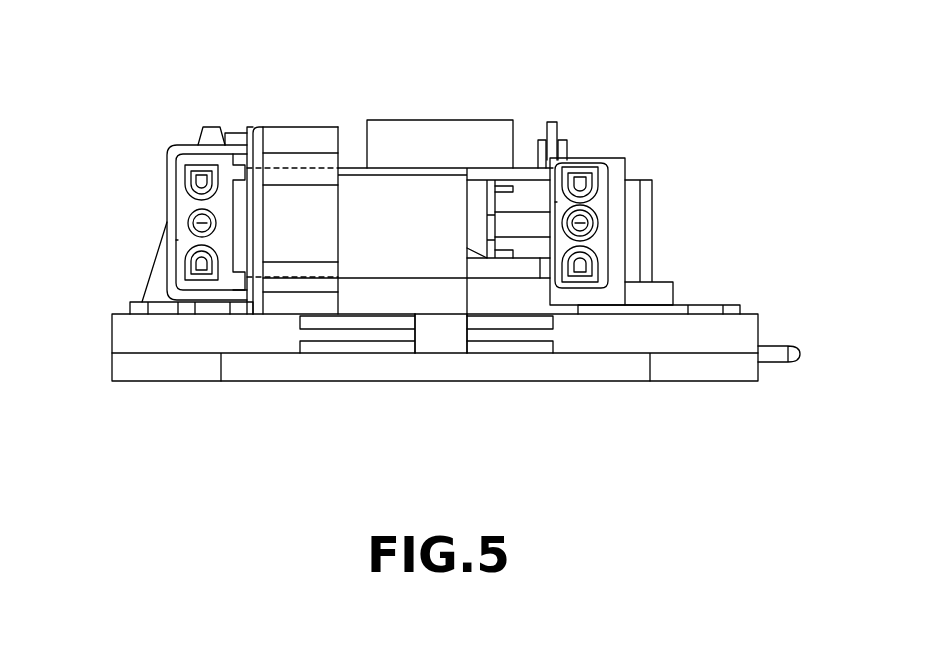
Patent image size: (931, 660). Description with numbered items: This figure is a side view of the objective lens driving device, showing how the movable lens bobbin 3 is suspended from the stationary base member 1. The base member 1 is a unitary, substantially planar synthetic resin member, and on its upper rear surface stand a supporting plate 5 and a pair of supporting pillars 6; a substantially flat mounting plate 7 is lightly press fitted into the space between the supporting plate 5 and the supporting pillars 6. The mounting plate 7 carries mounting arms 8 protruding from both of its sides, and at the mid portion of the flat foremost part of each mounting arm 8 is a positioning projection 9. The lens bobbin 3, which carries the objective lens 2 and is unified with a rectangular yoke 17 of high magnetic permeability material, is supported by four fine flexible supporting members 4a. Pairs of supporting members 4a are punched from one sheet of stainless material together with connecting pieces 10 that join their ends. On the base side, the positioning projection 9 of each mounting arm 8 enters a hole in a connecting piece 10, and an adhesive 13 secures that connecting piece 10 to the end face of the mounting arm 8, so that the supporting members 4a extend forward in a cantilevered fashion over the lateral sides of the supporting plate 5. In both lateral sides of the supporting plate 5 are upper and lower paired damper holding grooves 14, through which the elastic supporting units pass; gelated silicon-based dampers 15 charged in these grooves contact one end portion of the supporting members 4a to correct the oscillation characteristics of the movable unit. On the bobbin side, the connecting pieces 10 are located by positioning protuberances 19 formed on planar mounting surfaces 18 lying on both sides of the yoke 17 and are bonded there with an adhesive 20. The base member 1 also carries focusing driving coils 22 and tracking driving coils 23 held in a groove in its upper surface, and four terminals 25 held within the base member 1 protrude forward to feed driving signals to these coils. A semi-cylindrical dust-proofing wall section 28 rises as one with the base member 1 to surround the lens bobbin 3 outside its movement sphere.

The base member 1 is at (131, 368).
The objective lens 2 is at (433, 130).
The lens bobbin 3 is at (472, 207).
The supporting member 4a is at (352, 162).
The supporting plate 5 is at (303, 138).
The supporting pillar 6 is at (210, 130).
The mounting plate 7 is at (237, 135).
The mounting arm 8 is at (167, 158).
The positioning projection 9 is at (195, 225).
The connecting piece 10 is at (180, 240).
The adhesive 13 is at (187, 183).
The damper holding groove 14 is at (275, 157).
The damper 15 is at (322, 158).
The yoke 17 is at (528, 198).
The mounting surface 18 is at (618, 168).
The positioning protuberance 19 is at (602, 223).
The adhesive 20 is at (580, 170).
The focusing driving coil 22 is at (541, 140).
The tracking driving coil 23 is at (553, 122).
The terminal 25 is at (778, 350).
The dust-proofing wall section 28 is at (440, 303).